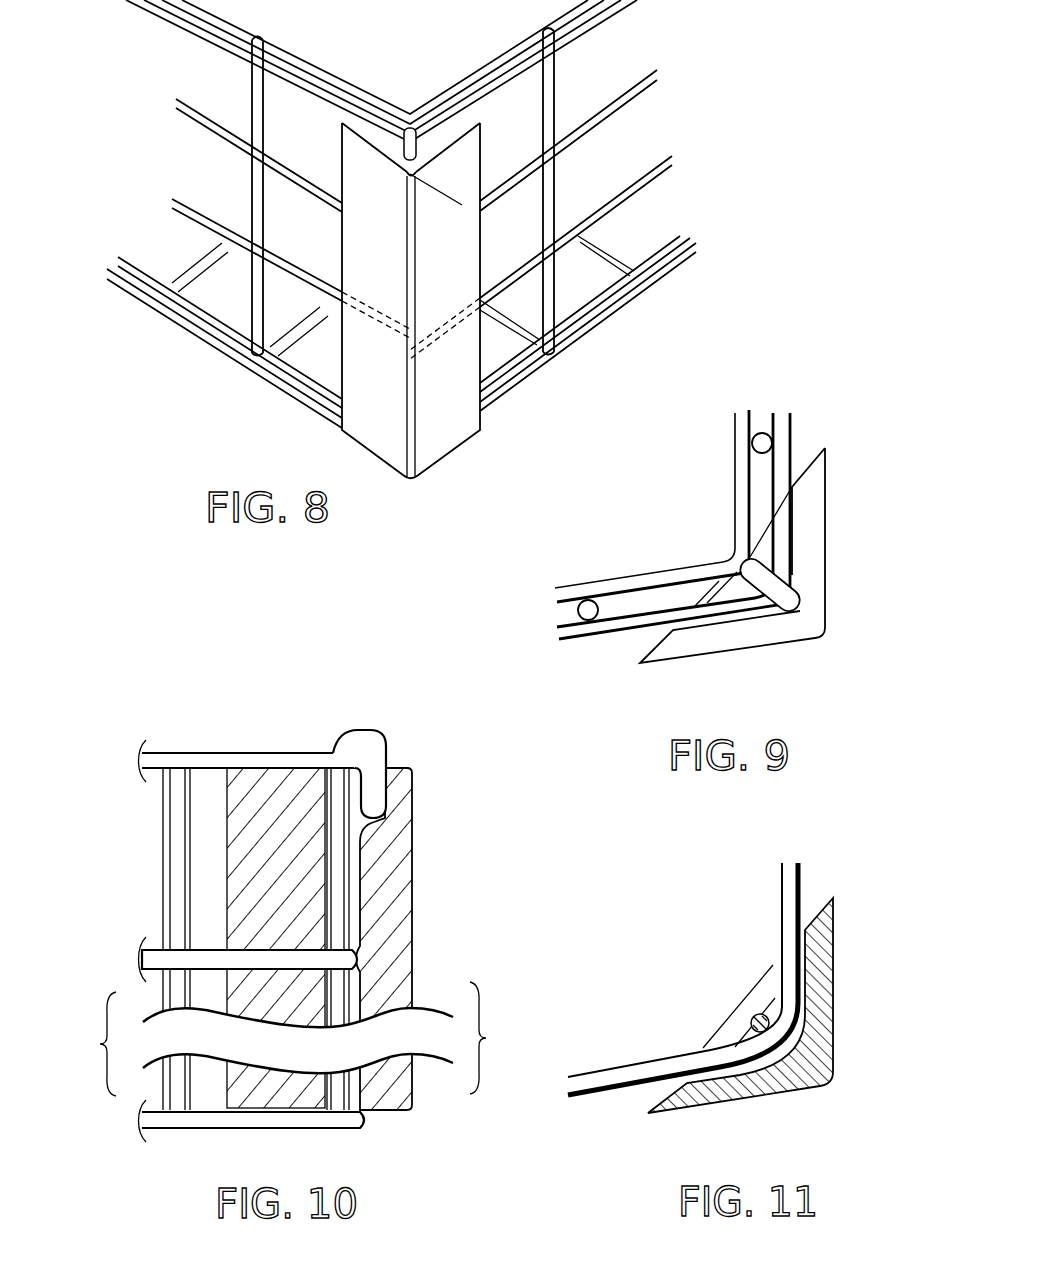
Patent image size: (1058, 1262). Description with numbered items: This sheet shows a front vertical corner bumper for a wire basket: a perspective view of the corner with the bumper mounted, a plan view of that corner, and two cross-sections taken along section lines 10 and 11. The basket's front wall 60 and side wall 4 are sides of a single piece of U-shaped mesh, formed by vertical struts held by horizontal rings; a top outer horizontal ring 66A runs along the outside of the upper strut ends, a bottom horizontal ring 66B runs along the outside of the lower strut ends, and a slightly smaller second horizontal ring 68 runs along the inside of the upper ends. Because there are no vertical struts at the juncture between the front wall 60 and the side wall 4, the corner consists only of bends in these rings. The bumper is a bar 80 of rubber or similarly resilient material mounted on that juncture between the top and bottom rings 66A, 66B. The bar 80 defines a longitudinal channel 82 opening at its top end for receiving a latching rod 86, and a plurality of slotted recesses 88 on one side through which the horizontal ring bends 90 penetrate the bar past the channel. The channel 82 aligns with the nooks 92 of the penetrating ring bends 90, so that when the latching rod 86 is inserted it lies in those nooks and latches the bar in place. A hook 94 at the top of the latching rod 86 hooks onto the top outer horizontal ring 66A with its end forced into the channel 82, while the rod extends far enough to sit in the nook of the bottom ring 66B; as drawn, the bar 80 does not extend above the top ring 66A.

In FIG. 8, the side wall 4 is at (180, 206).
In FIG. 10, the side wall 4 is at (170, 1002).
In FIG. 8, the section line 10— 10 is at (296, 81).
In FIG. 8, the section line 11— 11 is at (300, 240).
In FIG. 8, the front wall 60 is at (607, 208).
In FIG. 8, the top outer horizontal ring 66A is at (200, 18).
In FIG. 9, the top outer horizontal ring 66A is at (613, 637).
In FIG. 10, the top outer horizontal ring 66A is at (165, 752).
In FIG. 8, the bottom horizontal ring 66B is at (212, 336).
In FIG. 10, the bottom horizontal ring 66B is at (180, 1125).
In FIG. 8, the second horizontal ring 68 is at (290, 48).
In FIG. 9, the second horizontal ring 68 is at (645, 585).
In FIG. 8, the bar 80 is at (447, 436).
In FIG. 9, the bar 80 is at (826, 497).
In FIG. 10, the bar 80 is at (413, 872).
In FIG. 11, the bar 80 is at (837, 966).
In FIG. 9, the longitudinal channel 82 is at (765, 556).
In FIG. 10, the longitudinal channel 82 is at (360, 820).
In FIG. 11, the longitudinal channel 82 is at (772, 1006).
In FIG. 10, the latching rod 86 is at (343, 918).
In FIG. 11, the latching rod 86 is at (755, 1026).
In FIG. 10, the slotted recesses 88 is at (232, 950).
In FIG. 11, the slotted recesses 88 is at (770, 980).
In FIG. 10, the horizontal ring bends 90 is at (363, 957).
In FIG. 11, the horizontal ring bends 90 is at (785, 1027).
In FIG. 11, the nooks 92 is at (747, 1038).
In FIG. 8, the hook 94 is at (412, 128).
In FIG. 9, the hook 94 is at (797, 604).
In FIG. 10, the hook 94 is at (373, 738).